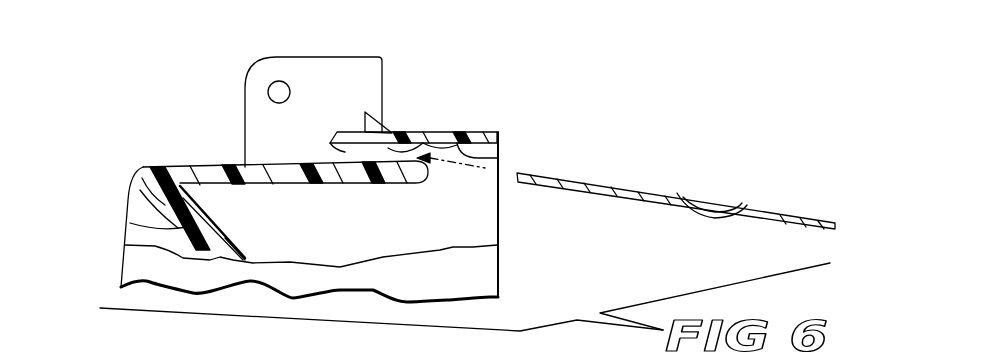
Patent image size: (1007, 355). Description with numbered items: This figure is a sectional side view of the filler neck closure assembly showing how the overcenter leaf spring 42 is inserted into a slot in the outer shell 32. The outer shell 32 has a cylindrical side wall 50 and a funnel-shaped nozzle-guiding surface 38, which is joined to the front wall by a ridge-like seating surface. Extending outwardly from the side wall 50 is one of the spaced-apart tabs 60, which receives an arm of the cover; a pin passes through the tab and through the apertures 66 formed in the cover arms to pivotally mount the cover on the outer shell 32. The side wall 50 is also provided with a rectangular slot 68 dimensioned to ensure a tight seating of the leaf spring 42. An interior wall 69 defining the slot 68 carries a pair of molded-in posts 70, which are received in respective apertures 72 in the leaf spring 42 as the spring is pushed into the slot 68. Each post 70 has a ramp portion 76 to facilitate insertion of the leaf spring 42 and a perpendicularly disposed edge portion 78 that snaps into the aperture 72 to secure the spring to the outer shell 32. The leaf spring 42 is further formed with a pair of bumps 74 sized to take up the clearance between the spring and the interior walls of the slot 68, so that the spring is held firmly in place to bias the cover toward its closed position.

The outer shell 32 is at (512, 122).
The funnel-shaped nozzle-guiding surface 38 is at (130, 223).
The overcenter leaf spring 42 is at (640, 190).
The cylindrical side wall 50 is at (163, 165).
The spaced-apart tabs 60 is at (340, 67).
The apertures 66 is at (268, 94).
The rectangular slot 68 is at (337, 152).
The interior wall 69 is at (503, 150).
The molded-in posts 70 is at (420, 147).
The apertures 72 is at (767, 220).
The bumps 74 is at (712, 220).
The ramp portions 76 is at (482, 168).
The edge portions 78 is at (388, 147).